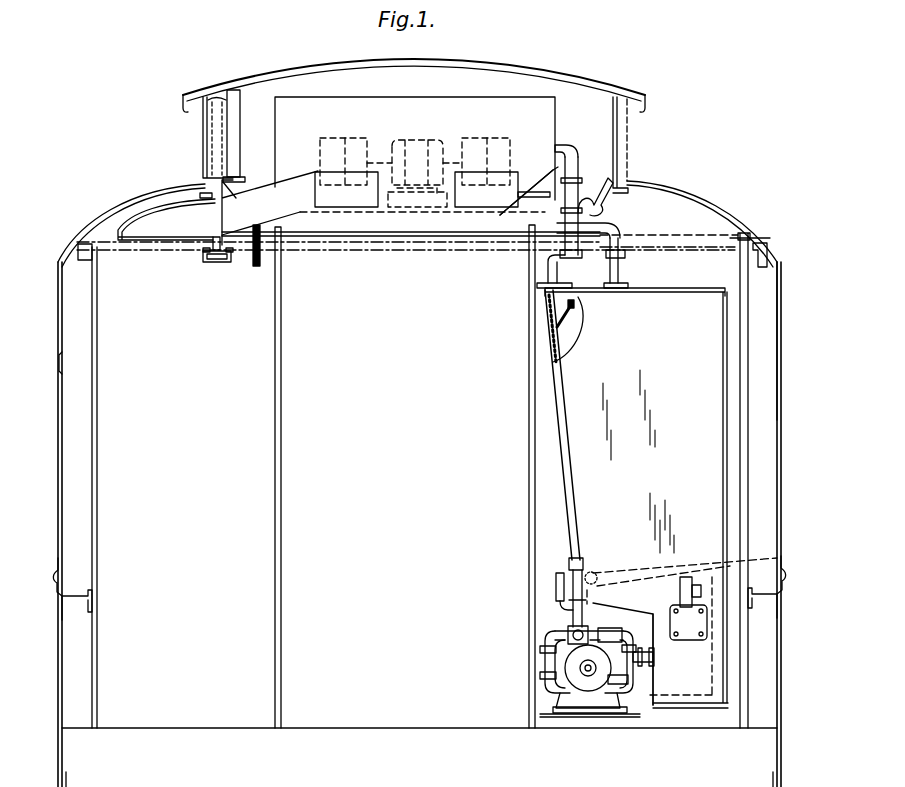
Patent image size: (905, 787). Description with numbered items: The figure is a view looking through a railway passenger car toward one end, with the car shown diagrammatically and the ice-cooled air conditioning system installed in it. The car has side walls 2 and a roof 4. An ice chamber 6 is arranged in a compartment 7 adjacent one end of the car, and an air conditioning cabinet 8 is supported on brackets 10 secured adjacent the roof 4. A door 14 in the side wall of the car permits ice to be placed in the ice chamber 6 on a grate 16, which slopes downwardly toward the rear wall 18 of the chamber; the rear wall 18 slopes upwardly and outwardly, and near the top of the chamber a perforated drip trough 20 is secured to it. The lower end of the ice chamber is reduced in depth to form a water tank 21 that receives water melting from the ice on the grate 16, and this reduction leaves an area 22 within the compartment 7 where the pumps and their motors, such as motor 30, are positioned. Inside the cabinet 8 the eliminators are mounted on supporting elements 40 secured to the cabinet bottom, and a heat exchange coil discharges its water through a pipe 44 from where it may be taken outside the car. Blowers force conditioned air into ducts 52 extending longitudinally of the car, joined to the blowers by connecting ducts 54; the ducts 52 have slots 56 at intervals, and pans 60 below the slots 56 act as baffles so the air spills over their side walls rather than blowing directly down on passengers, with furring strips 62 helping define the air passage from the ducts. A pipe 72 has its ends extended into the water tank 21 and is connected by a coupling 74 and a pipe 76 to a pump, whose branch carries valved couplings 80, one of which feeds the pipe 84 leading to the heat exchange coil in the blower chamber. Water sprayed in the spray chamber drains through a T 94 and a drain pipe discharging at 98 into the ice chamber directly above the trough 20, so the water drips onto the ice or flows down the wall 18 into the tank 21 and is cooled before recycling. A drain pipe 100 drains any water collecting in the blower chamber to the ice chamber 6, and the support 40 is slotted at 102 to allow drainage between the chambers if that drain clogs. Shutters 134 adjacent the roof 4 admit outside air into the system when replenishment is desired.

The side walls 2 is at (58, 470).
The roof 4 is at (613, 83).
The ice chamber 6 is at (700, 486).
The compartment 7 is at (732, 655).
The air conditioning cabinet 8 is at (483, 108).
The brackets 10 is at (335, 236).
The door 14 is at (781, 422).
The grate 16 is at (607, 570).
The rear wall 18 is at (557, 349).
The perforated drip trough 20 is at (574, 307).
The water tank 21 is at (690, 688).
The area 22 is at (633, 698).
The motor 30 is at (586, 684).
The supporting elements 40 is at (531, 195).
The pipe 44 is at (261, 268).
The ducts 52 is at (150, 207).
The connecting ducts 54 is at (297, 180).
The slots 56 is at (216, 258).
The pans 60 is at (228, 262).
The furring strips 62 is at (205, 251).
The pipe 72 is at (646, 660).
The coupling 74 is at (637, 668).
The pipe 76 is at (542, 670).
The valved couplings 80 is at (572, 633).
The pipe 84 is at (567, 510).
The T 94 is at (576, 175).
The discharge 98 is at (562, 283).
The drain pipe 100 is at (621, 228).
The slot 102 is at (532, 198).
The shutters 134 is at (212, 90).